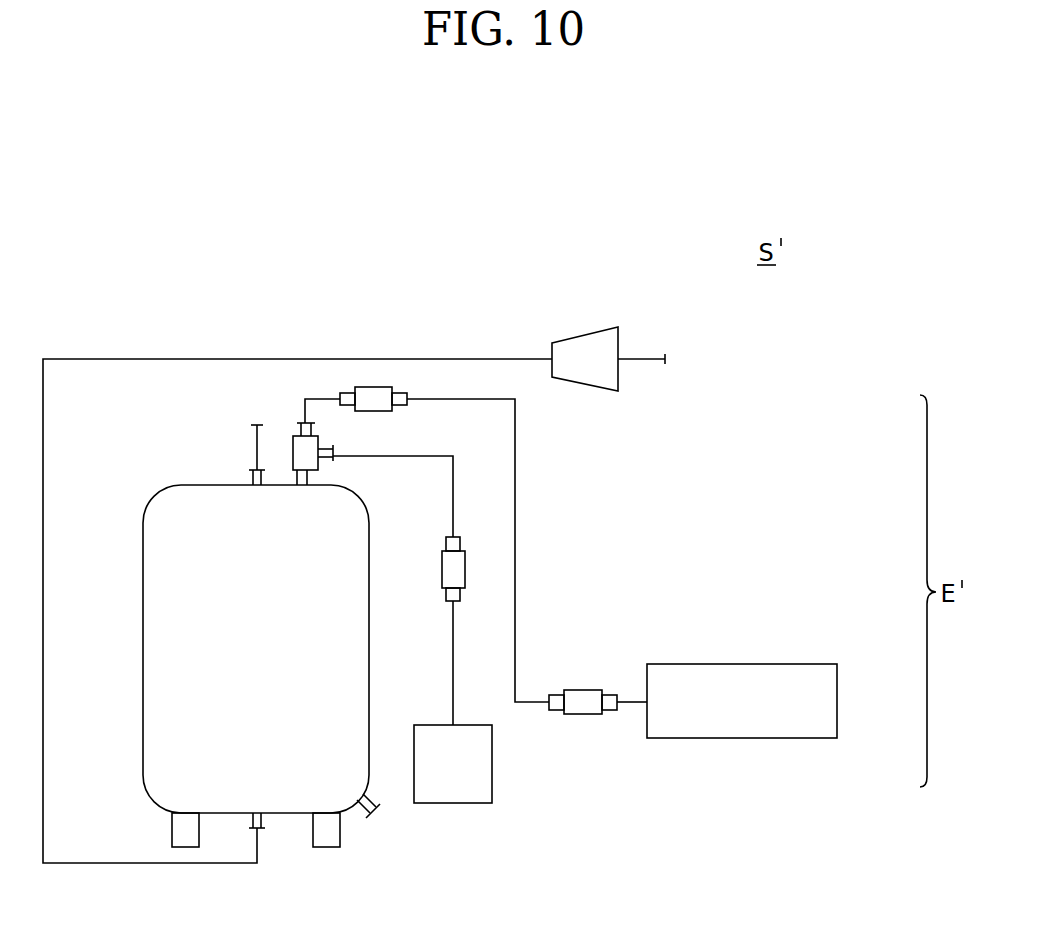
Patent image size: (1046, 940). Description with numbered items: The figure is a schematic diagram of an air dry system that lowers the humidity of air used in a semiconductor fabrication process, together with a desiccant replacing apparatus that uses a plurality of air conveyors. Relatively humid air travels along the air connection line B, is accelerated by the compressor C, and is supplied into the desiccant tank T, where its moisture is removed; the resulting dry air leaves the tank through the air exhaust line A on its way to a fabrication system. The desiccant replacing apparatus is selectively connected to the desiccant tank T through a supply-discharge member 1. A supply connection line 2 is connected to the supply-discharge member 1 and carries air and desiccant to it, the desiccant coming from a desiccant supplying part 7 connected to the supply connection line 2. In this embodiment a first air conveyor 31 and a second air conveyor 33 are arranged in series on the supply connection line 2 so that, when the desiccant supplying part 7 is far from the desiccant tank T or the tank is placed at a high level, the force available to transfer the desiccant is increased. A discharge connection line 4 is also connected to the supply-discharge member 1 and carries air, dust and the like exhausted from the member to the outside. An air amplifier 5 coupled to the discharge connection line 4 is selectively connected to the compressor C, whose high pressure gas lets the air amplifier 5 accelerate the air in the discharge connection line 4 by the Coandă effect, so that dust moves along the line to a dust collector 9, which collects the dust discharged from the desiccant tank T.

The first air conveyor 31 is at (410, 396).
The supply-discharge member 1 is at (321, 440).
The air amplifier 5 is at (462, 545).
The supply connection line 2 is at (517, 587).
The discharge connection line 4 is at (456, 613).
The second air conveyor 33 is at (589, 688).
The desiccant supplying part 7 is at (840, 713).
The dust collector 9 is at (496, 770).
The air exhaust line A is at (253, 452).
The air connection line B is at (305, 357).
The compressor C is at (585, 331).
The desiccant tank T is at (140, 628).